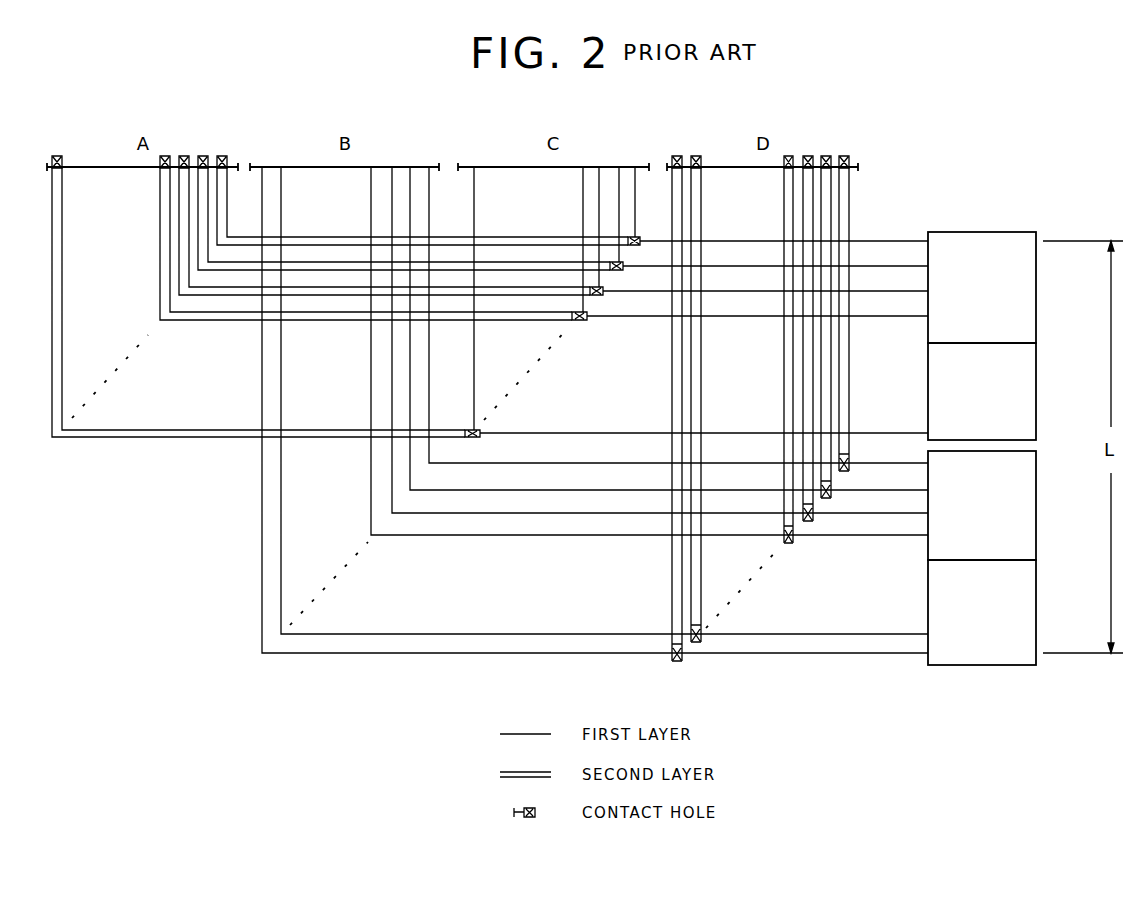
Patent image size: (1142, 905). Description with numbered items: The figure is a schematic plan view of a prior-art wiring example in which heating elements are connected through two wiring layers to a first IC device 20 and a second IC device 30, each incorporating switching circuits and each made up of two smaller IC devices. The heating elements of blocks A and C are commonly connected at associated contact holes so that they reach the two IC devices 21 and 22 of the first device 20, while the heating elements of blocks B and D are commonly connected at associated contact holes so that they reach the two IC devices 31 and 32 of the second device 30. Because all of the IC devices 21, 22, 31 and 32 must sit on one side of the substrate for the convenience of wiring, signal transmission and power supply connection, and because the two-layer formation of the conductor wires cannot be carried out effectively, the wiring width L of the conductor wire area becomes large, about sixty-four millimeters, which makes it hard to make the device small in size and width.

The first IC device 20 is at (1009, 313).
The 128-bit IC device 21 is at (993, 232).
The 128-bit IC device 22 is at (1030, 378).
The second IC device 30 is at (1008, 555).
The IC device 31 is at (1030, 464).
The IC device 32 is at (1030, 586).